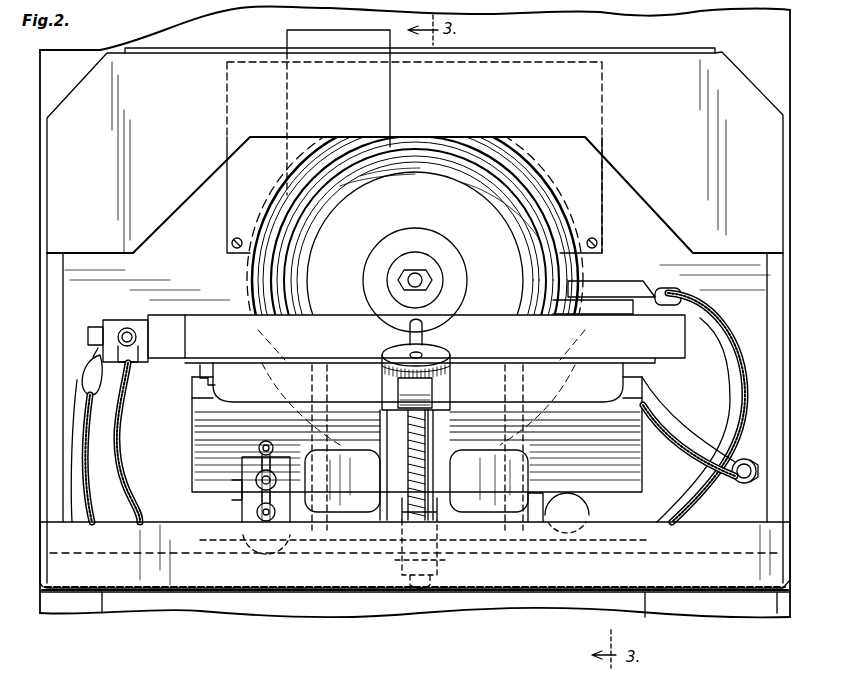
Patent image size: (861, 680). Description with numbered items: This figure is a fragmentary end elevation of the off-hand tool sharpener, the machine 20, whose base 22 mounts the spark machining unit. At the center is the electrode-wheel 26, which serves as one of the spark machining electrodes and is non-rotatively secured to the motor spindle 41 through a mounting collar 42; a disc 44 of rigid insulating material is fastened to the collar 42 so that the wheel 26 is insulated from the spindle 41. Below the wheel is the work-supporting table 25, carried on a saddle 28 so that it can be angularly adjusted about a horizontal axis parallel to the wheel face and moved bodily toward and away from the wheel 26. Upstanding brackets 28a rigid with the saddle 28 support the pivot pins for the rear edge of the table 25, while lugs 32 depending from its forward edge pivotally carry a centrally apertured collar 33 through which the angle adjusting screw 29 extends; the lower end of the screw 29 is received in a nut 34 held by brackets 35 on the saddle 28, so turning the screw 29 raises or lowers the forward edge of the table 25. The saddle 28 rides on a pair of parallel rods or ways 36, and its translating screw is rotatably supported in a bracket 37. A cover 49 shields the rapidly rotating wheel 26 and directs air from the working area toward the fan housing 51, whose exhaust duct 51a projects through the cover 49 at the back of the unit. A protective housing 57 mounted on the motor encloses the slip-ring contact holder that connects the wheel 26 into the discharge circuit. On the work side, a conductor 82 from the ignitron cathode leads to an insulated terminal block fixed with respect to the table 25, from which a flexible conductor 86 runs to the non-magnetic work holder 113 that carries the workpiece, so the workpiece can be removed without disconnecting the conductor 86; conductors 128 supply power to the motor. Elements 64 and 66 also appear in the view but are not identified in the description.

The machine 20 is at (197, 609).
The base 22 is at (122, 600).
The work-supporting table 25 is at (182, 324).
The electrode-wheel 26 is at (430, 203).
The saddle 28 is at (200, 466).
The upstanding brackets 28a is at (198, 385).
The angle adjusting screw 29 is at (426, 476).
The lugs 32 is at (396, 386).
The centrally apertured collar 33 is at (428, 386).
The nut 34 is at (437, 578).
The brackets 35 is at (396, 512).
The rods or ways 36 is at (242, 535).
The bracket 37 is at (250, 470).
The spindle 41 is at (433, 281).
The mounting collar 42 is at (428, 258).
The insulating disc 44 is at (381, 259).
The cover 49 is at (528, 50).
The fan housing 51 is at (328, 360).
The exhaust duct 51a is at (287, 33).
The protective housing 57 is at (592, 173).
The terminal clamp 64 is at (122, 322).
The cable 66 is at (132, 420).
The conductor 82 is at (98, 520).
The flexible conductor 86 is at (697, 493).
The work holder 113 is at (618, 284).
The conductors 128 is at (652, 415).